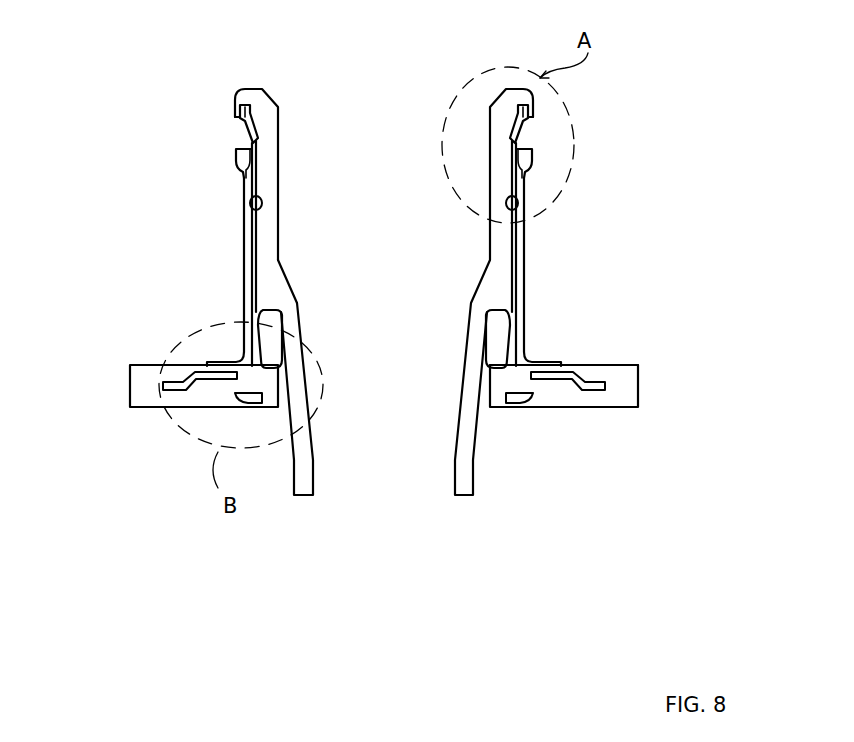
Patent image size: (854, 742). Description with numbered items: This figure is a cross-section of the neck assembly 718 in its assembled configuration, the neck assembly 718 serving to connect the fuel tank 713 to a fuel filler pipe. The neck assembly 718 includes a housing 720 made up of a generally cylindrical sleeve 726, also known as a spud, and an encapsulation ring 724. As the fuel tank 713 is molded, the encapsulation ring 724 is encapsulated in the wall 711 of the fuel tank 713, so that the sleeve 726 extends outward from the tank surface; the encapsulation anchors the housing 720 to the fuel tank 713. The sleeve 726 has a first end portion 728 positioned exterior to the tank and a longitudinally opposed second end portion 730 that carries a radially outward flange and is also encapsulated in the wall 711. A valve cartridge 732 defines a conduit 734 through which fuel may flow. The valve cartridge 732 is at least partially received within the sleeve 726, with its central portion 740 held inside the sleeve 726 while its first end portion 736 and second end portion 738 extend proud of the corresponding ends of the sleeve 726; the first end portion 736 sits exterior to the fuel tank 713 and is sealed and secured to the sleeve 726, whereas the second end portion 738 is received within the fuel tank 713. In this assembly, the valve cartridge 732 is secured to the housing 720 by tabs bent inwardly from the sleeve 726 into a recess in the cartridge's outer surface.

The wall 711 is at (625, 364).
The fuel tank 713 is at (638, 397).
The neck assembly 718 is at (629, 232).
The housing 720 is at (525, 287).
The encapsulation ring 724 is at (600, 386).
The sleeve 726 is at (523, 265).
The first end portion 728 is at (545, 138).
The second end portion 730 is at (530, 358).
The valve cartridge 732 is at (283, 290).
The conduit 734 is at (407, 247).
The first end portion 736 is at (273, 85).
The second end portion 738 is at (315, 491).
The central portion 740 is at (298, 333).